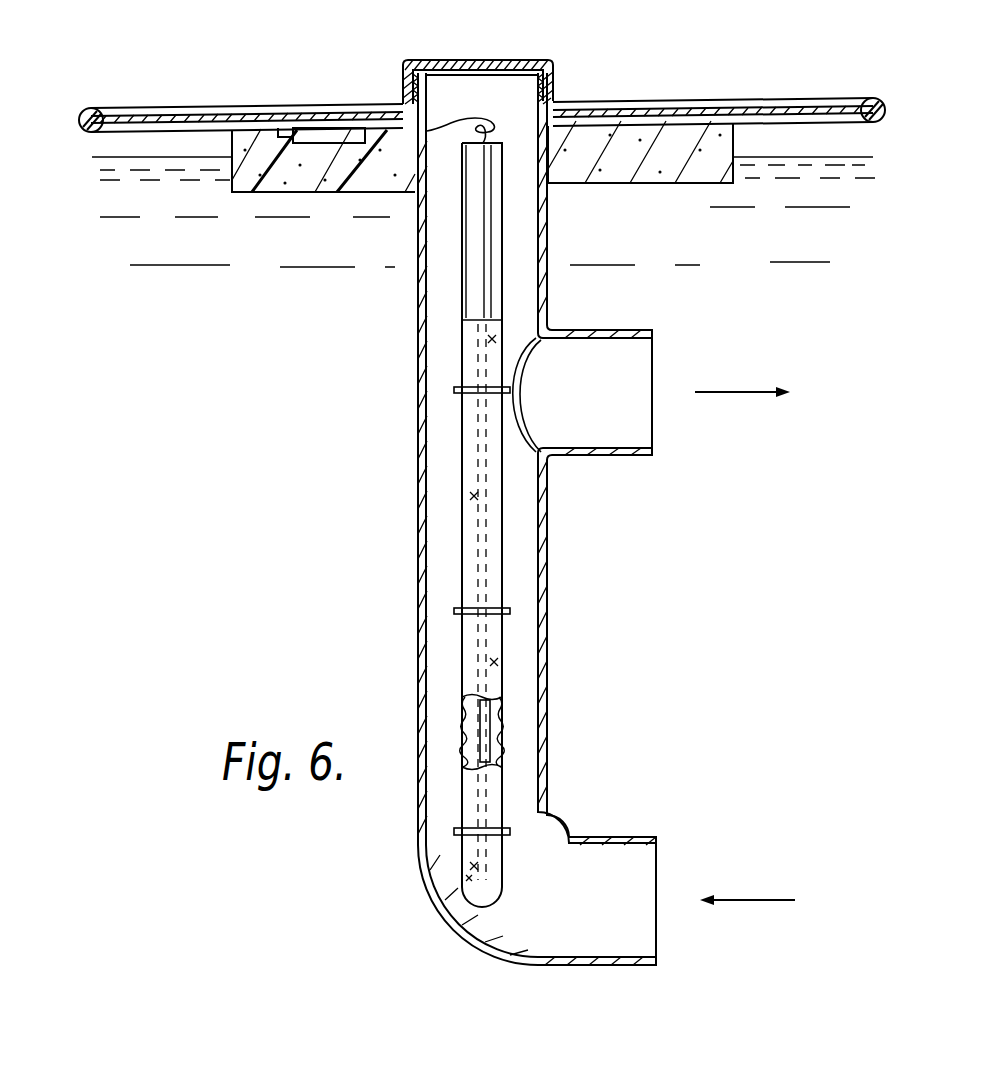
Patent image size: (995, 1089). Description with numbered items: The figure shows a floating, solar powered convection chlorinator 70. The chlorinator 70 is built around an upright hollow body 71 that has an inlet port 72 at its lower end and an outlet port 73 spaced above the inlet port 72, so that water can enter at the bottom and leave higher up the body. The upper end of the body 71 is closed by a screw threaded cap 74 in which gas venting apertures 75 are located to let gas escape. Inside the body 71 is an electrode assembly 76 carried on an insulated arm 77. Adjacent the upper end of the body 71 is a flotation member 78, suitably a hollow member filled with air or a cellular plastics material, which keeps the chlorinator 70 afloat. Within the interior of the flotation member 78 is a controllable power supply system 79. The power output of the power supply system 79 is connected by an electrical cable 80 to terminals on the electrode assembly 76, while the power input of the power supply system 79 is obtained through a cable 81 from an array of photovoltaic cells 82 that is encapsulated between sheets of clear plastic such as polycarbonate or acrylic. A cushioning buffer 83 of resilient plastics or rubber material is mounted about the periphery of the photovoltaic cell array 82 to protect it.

The chlorinator 70 is at (549, 568).
The upright hollow body 71 is at (418, 502).
The inlet port 72 is at (631, 940).
The outlet port 73 is at (627, 428).
The screw threaded cap 74 is at (550, 60).
The gas venting apertures 75 is at (459, 60).
The electrode assembly 76 is at (497, 732).
The insulated arm 77 is at (487, 228).
The flotation member 78 is at (640, 142).
The controllable power supply system 79 is at (331, 133).
The electrical cable 80 is at (380, 130).
The cable 81 is at (273, 138).
The array of photovoltaic cells 82 is at (181, 118).
The cushioning buffer 83 is at (875, 100).